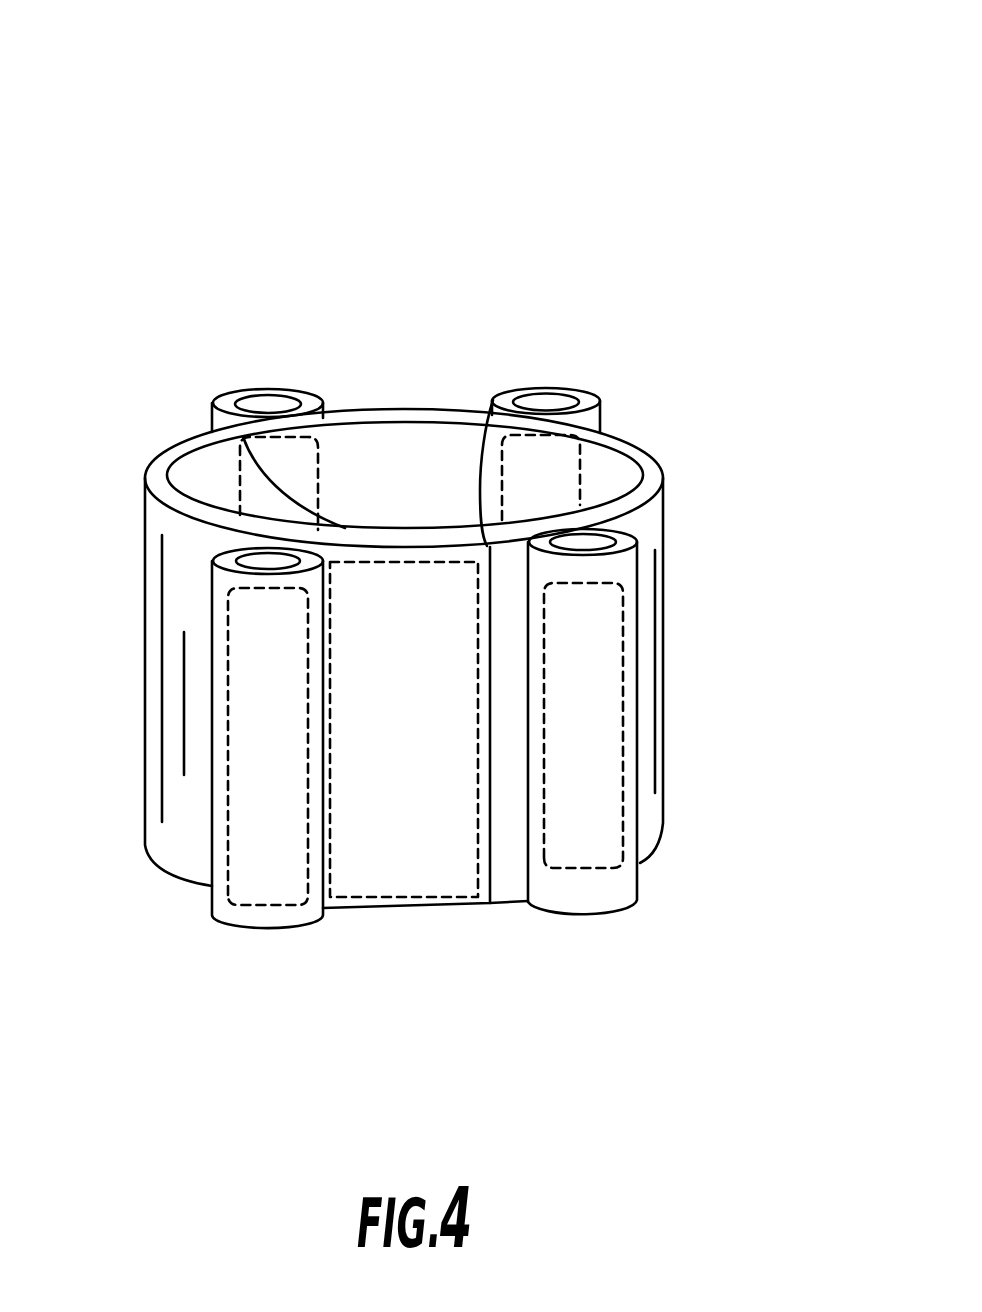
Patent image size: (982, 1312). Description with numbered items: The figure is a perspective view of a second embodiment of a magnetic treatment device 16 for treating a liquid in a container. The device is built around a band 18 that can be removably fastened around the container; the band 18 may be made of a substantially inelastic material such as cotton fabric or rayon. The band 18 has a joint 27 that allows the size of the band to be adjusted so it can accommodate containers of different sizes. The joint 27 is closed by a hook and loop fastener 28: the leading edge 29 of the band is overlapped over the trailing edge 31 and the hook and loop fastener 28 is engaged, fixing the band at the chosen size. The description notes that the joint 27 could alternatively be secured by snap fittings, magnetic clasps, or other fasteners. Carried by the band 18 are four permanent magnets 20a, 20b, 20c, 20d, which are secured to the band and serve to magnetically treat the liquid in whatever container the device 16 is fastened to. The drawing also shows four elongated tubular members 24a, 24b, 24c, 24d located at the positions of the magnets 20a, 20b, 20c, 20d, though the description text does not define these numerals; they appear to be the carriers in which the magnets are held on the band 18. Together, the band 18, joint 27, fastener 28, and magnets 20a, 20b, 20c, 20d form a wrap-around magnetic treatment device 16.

The magnetic treatment device 16 is at (674, 138).
The band 18 is at (145, 718).
The permanent magnet 20a is at (247, 905).
The permanent magnet 20b is at (597, 870).
The permanent magnet 20c is at (555, 433).
The permanent magnet 20d is at (297, 432).
The first tube 24a is at (288, 928).
The second tube 24b is at (630, 910).
The third tube 24c is at (595, 401).
The fourth tube 24d is at (313, 393).
The joint 27 is at (492, 695).
The hook and loop fastener 28 is at (450, 905).
The leading edge 29 is at (493, 400).
The trailing edge 31 is at (243, 437).